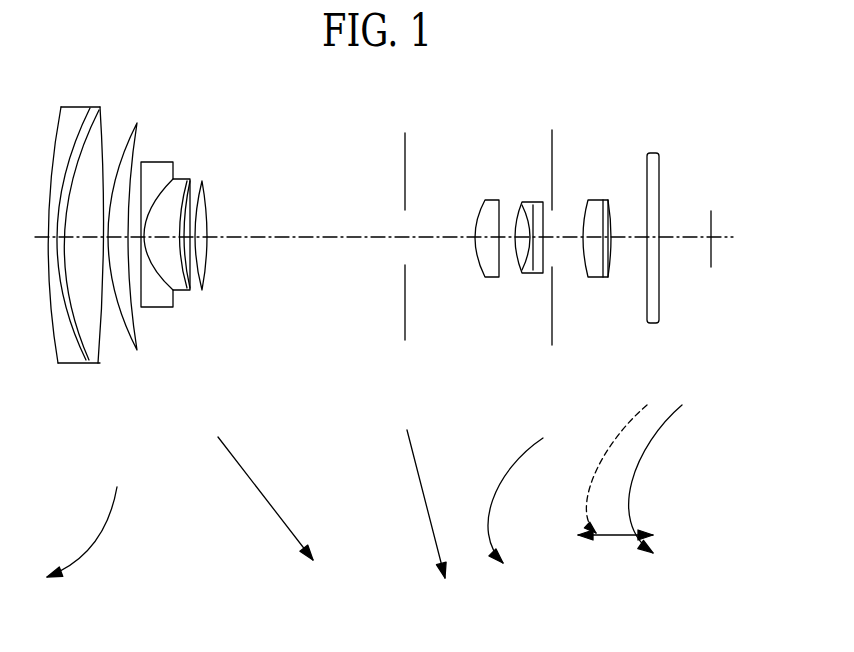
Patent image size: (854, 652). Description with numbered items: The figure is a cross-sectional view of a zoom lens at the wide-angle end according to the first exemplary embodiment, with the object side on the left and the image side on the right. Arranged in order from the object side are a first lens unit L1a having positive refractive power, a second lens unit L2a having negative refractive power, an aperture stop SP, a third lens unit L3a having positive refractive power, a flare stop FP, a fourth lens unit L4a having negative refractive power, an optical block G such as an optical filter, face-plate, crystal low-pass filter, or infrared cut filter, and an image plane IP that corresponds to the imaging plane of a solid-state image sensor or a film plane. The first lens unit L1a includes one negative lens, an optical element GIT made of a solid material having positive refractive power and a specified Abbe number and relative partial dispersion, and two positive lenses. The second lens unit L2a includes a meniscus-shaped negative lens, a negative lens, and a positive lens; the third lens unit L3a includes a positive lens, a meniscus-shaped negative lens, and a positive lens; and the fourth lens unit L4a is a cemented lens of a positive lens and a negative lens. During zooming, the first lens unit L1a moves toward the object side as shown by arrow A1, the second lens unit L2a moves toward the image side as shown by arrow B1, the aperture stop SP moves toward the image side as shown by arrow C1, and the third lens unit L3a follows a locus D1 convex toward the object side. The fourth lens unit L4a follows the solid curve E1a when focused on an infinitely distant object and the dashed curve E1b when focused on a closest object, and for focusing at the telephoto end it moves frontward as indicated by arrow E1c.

The optical element GIT is at (89, 121).
The first lens unit L1a is at (102, 270).
The second lens unit L2a is at (243, 343).
The third lens unit L3a is at (570, 405).
The fourth lens unit L4a is at (596, 280).
The aperture stop SP is at (405, 150).
The flare stop FP is at (552, 153).
The optical block G is at (652, 153).
The image plane IP is at (712, 218).
The arrow A1 is at (97, 528).
The arrow B1 is at (252, 477).
The arrow C1 is at (418, 485).
The locus D1 is at (492, 480).
The solid curve E1a is at (638, 452).
The dashed curve E1b is at (582, 497).
The arrow E1c is at (618, 540).